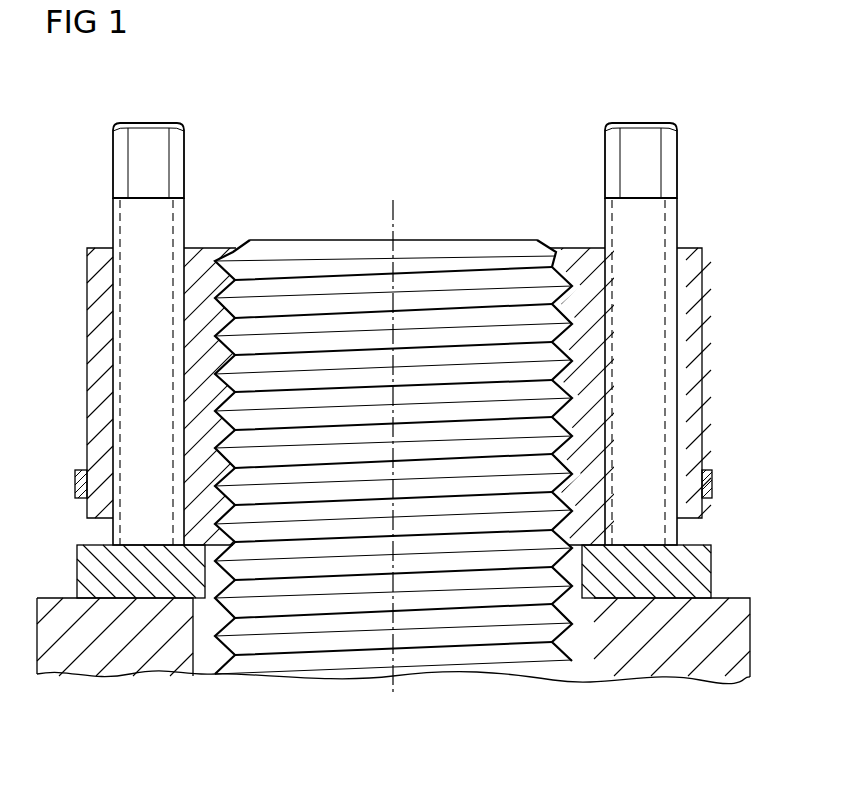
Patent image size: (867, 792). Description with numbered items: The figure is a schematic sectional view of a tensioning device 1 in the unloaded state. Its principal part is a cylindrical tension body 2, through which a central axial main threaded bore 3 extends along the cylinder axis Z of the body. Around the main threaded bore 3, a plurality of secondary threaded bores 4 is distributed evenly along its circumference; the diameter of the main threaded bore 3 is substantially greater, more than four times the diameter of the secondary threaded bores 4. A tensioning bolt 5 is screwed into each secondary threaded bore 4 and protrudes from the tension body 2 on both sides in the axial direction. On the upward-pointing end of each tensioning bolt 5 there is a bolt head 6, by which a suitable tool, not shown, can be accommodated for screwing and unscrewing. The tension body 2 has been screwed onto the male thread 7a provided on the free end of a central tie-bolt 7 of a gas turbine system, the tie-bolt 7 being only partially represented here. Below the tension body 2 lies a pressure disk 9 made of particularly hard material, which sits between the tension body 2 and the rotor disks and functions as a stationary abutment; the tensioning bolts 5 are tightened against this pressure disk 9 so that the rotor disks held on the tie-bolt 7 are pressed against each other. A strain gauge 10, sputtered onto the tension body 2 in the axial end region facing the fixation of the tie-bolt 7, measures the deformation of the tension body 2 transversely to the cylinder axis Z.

The tensioning device 1 is at (699, 88).
The tension body 2 is at (690, 390).
The main threaded bore 3 is at (570, 262).
The secondary threaded bore 4 is at (102, 310).
The tensioning bolt 5 is at (112, 222).
The bolt head 6 is at (120, 158).
The central tie-bolt 7 is at (448, 226).
The male thread 7a is at (237, 288).
The pressure disk 9 is at (703, 582).
The strain gauge 10 is at (712, 483).
The cylinder axis Z is at (393, 204).